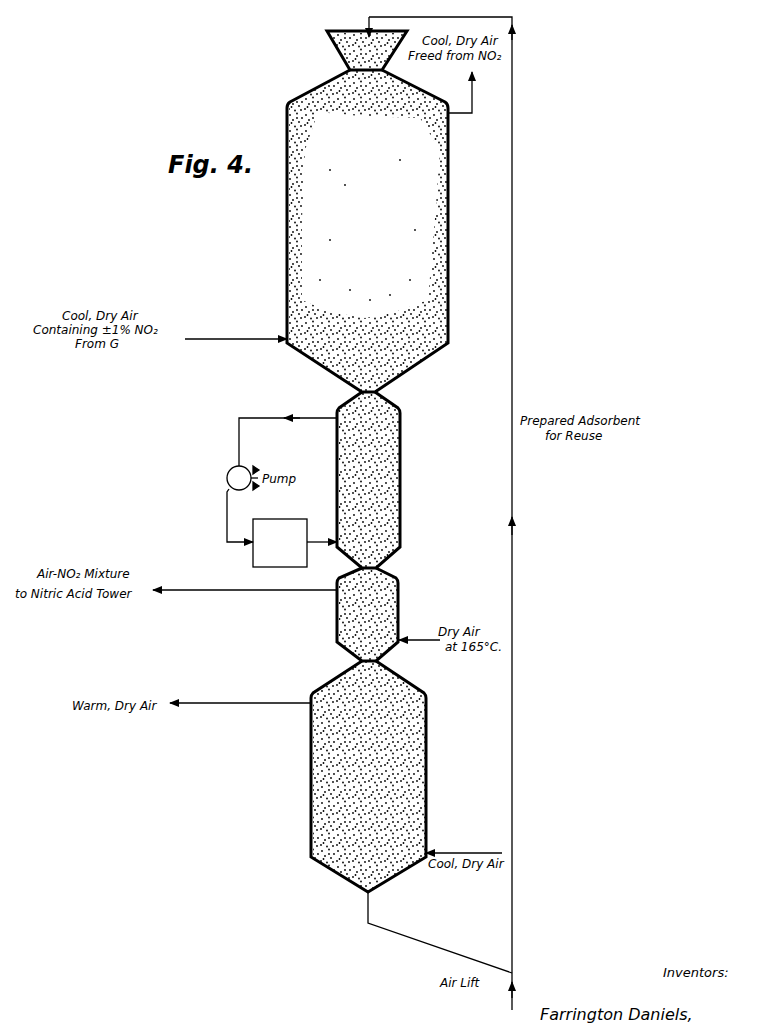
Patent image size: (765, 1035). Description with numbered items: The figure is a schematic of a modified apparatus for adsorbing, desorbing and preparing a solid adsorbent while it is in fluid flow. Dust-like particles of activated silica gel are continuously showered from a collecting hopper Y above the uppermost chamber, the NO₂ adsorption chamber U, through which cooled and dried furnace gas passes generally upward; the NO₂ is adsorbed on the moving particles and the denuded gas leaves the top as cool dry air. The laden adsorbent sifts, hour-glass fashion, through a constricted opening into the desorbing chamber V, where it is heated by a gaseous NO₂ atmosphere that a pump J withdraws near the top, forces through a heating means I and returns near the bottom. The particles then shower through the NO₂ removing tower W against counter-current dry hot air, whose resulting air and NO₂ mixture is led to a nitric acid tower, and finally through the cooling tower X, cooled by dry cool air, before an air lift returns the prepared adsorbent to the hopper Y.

The NO₂ adsorption chamber U is at (432, 180).
The desorbing chamber V is at (401, 470).
The NO₂ removing tower W is at (399, 592).
The cooling tower X is at (428, 767).
The collecting hopper Y is at (334, 42).
The pump J is at (228, 478).
The heating means I is at (292, 519).